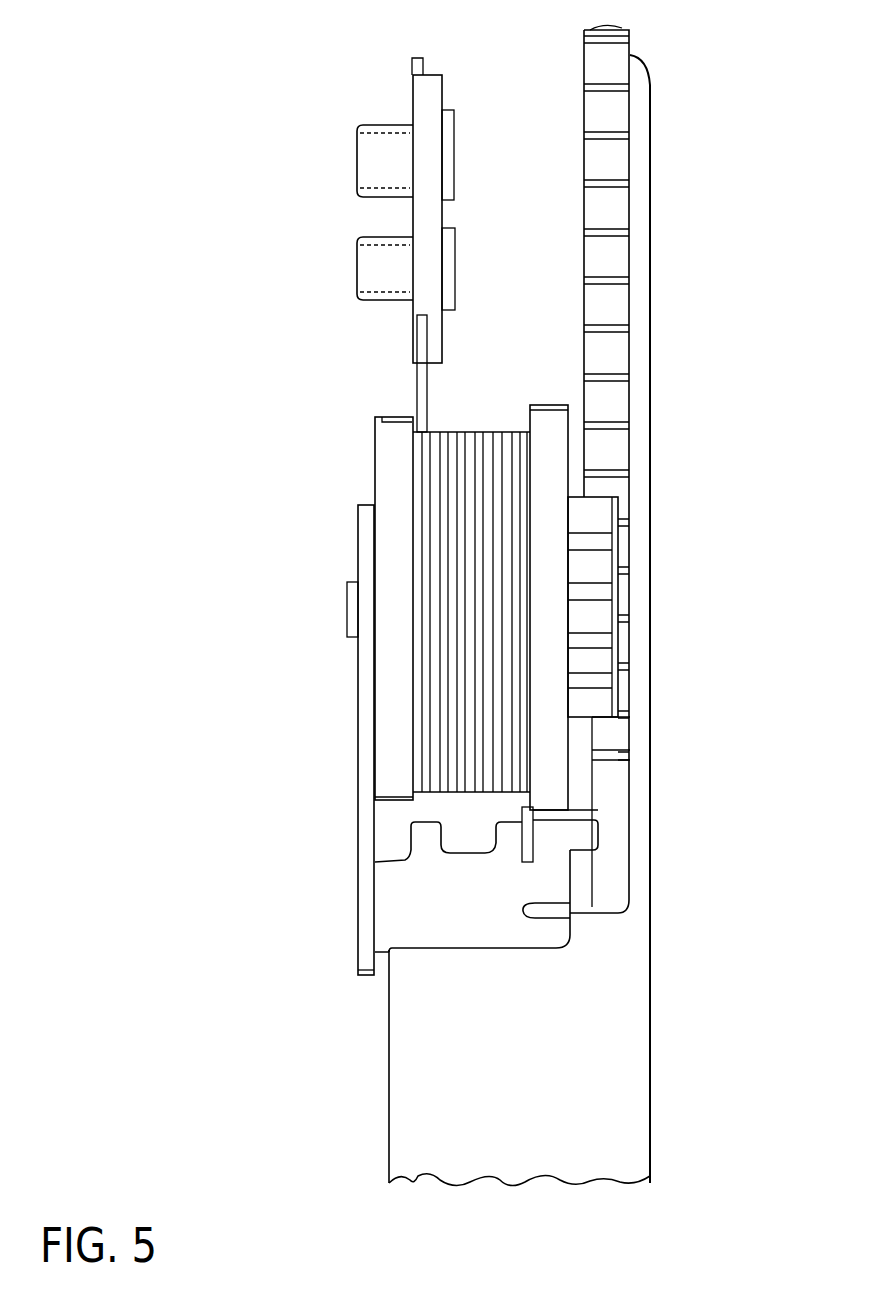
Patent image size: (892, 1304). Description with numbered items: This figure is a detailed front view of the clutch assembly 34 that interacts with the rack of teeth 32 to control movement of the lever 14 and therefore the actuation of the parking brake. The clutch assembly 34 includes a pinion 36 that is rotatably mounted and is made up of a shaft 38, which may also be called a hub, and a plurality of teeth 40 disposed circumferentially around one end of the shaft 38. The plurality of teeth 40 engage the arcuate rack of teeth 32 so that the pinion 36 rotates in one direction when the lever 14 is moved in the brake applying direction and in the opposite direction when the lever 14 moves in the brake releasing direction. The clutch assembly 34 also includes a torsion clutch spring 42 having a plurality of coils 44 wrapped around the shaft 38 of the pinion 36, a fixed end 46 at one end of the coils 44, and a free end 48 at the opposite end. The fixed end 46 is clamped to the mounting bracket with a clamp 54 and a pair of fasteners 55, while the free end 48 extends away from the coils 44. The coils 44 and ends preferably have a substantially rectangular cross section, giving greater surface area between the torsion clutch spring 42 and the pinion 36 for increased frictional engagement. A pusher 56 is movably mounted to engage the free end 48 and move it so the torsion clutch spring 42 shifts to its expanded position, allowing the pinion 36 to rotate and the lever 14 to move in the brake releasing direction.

The lever 14 is at (633, 1113).
The rack of teeth 32 is at (608, 125).
The clutch assembly 34 is at (330, 682).
The pinion 36 is at (397, 600).
The shaft 38 is at (437, 743).
The plurality of teeth 40 is at (608, 590).
The torsion clutch spring 42 is at (487, 413).
The coils 44 is at (445, 500).
The fixed end 46 is at (425, 363).
The free end 48 is at (533, 840).
The clamp 54 is at (433, 105).
The fasteners 55 is at (375, 163).
The pusher 56 is at (398, 912).